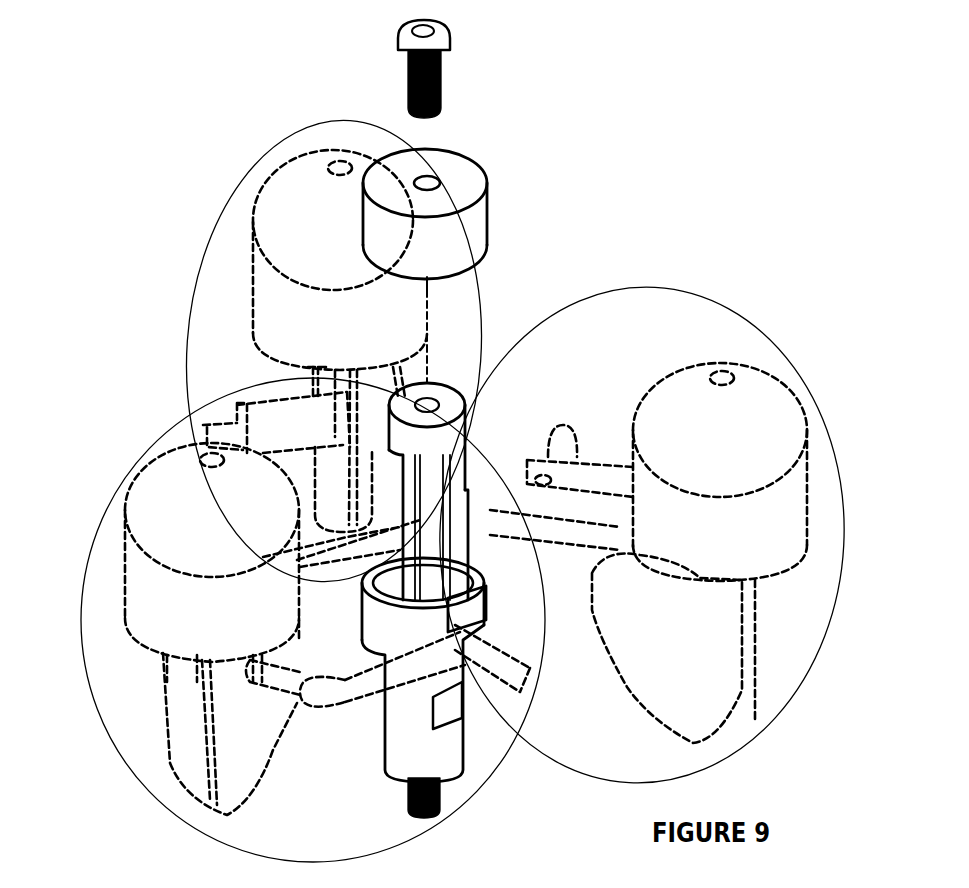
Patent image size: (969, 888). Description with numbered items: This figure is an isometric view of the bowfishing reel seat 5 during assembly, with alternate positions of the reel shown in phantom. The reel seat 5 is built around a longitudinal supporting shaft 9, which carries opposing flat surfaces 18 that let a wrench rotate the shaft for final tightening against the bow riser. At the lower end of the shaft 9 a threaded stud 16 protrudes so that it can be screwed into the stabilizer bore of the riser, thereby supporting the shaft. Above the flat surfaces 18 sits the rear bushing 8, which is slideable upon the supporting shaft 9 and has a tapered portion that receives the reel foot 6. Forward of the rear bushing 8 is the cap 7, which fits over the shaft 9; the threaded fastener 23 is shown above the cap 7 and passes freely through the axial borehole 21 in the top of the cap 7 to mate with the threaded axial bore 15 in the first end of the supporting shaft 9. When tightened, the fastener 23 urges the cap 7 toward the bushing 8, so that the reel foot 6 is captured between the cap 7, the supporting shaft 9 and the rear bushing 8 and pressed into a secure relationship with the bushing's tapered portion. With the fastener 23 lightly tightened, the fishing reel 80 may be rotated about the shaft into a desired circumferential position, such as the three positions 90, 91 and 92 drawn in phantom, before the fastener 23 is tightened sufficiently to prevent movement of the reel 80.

The bowfishing reel seat 5 is at (357, 753).
The reel foot 6 is at (463, 568).
The cap 7 is at (486, 198).
The rear bushing 8 is at (470, 612).
The longitudinal supporting shaft 9 is at (445, 440).
The threaded axial bore 15 is at (440, 380).
The threaded stud 16 is at (442, 805).
The flat surfaces 18 is at (448, 705).
The axial borehole 21 is at (432, 180).
The threaded fastener 23 is at (448, 40).
The fishing reel 80 is at (720, 472).
The reel position 90 is at (92, 556).
The reel position 91 is at (220, 190).
The reel position 92 is at (782, 355).